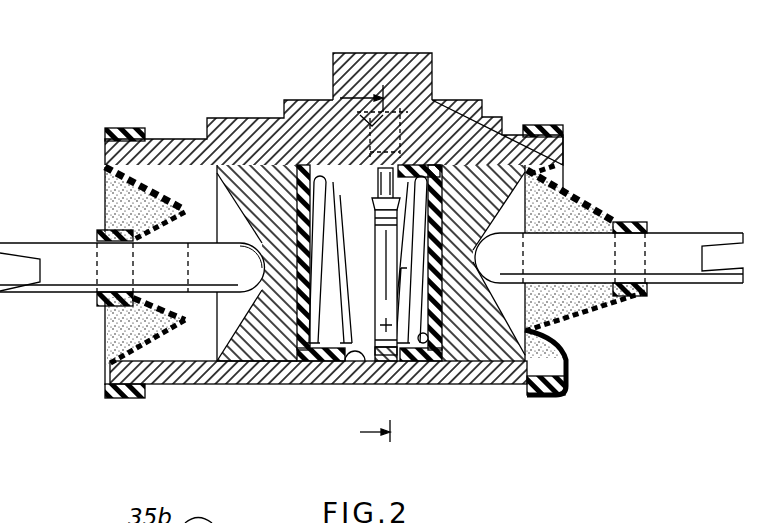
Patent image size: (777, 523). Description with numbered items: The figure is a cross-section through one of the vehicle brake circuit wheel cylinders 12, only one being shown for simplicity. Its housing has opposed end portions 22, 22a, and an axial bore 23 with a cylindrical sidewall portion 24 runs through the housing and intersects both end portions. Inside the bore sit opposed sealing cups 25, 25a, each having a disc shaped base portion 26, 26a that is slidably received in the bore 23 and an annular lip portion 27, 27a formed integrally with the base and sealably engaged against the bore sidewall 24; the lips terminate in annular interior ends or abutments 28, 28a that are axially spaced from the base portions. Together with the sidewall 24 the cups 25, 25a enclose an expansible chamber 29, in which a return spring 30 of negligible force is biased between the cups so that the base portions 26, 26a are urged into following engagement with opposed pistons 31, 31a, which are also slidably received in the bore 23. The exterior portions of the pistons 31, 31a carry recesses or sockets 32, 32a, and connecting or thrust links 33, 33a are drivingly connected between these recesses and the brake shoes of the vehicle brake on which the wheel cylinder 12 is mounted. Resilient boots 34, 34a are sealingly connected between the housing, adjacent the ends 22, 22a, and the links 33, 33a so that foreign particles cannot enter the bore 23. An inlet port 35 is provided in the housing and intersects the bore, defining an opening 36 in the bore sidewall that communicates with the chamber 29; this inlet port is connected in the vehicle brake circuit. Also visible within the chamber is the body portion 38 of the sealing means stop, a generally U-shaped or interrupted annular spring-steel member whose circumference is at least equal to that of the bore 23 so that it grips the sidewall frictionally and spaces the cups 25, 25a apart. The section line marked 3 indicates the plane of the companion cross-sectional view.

The wheel cylinder 12 is at (291, 87).
The end portion 22 is at (562, 134).
The end portion 22a is at (118, 148).
The axial bore 23 is at (160, 362).
The cylindrical sidewall portion 24 is at (200, 353).
The wheel cylinder cup 25 is at (483, 263).
The wheel cylinder cup 25a is at (273, 173).
The base portion 26 is at (448, 242).
The base portion 26a is at (292, 237).
The annular lip portion 27 is at (420, 361).
The annular lip portion 27a is at (313, 352).
The annular interior end 28 is at (397, 151).
The annular interior end 28a is at (352, 361).
The expansible chamber 29 is at (357, 163).
The section line for FIG. 3 is at (360, 278).
The return spring 30 is at (302, 325).
The piston 31 is at (483, 362).
The piston 31a is at (255, 361).
The recess 32 is at (483, 245).
The recess 32a is at (258, 262).
The connecting link 33 is at (597, 276).
The connecting link 33a is at (110, 280).
The resilient boot 34 is at (578, 200).
The resilient boot 34a is at (141, 204).
The inlet port 35 is at (395, 48).
The opening 36 is at (380, 202).
The body portion 38 is at (378, 297).